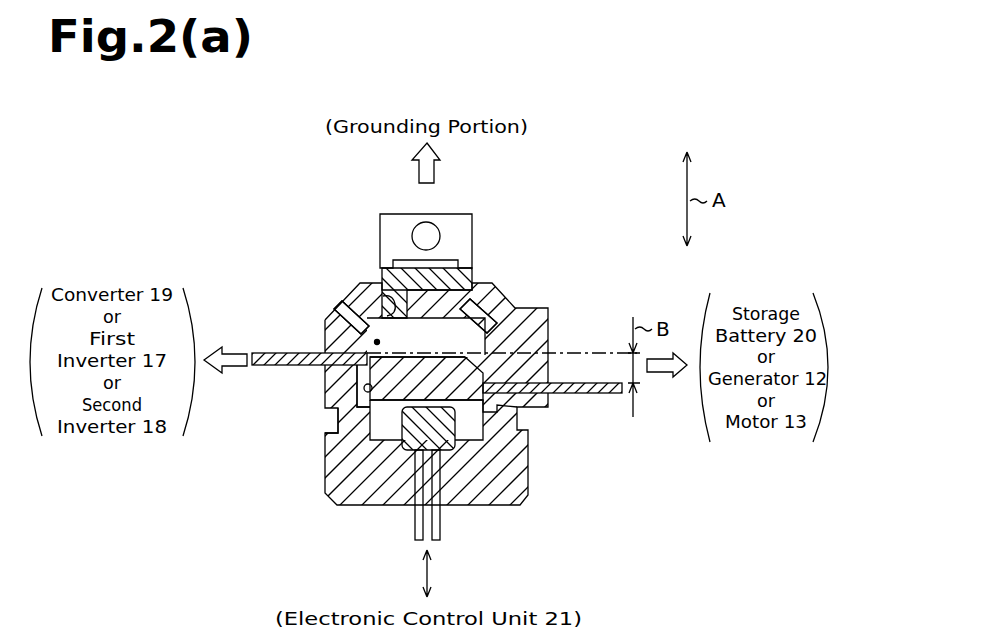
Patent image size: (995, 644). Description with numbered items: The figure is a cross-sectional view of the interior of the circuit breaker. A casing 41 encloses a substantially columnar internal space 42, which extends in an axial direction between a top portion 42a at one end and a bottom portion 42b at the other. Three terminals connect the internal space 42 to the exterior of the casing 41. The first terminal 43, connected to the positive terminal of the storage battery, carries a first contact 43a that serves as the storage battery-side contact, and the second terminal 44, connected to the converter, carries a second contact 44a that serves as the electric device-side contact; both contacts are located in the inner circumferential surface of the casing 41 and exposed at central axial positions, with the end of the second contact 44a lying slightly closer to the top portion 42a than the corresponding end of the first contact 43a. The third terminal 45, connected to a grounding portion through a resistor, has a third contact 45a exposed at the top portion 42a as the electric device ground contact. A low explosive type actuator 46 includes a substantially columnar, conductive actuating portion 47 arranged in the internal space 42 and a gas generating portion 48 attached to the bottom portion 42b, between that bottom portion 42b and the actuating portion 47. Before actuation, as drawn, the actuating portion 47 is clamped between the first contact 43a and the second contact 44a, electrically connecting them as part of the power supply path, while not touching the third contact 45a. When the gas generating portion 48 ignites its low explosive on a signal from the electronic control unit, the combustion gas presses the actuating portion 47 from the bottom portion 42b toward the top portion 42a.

The casing 41 is at (550, 328).
The internal space 42 is at (348, 343).
The top portion 42a is at (385, 277).
The bottom portion 42b is at (350, 438).
The first terminal 43 is at (612, 394).
The first contact 43a is at (513, 412).
The second terminal 44 is at (288, 353).
The second contact 44a is at (358, 402).
The third terminal 45 is at (470, 213).
The third contact 45a is at (362, 305).
The low explosive type actuator 46 is at (426, 362).
The actuating portion 47 is at (422, 353).
The gas generating portion 48 is at (457, 460).